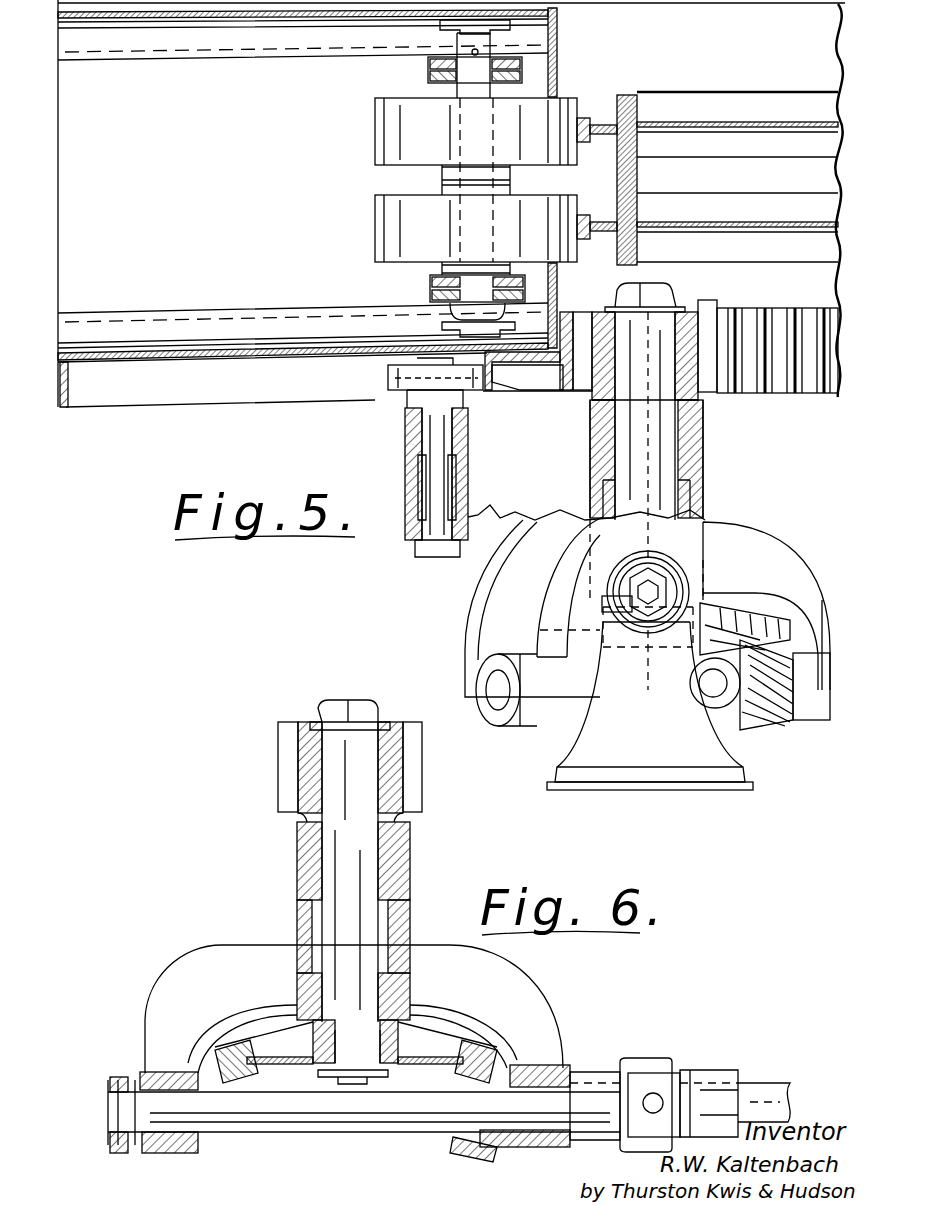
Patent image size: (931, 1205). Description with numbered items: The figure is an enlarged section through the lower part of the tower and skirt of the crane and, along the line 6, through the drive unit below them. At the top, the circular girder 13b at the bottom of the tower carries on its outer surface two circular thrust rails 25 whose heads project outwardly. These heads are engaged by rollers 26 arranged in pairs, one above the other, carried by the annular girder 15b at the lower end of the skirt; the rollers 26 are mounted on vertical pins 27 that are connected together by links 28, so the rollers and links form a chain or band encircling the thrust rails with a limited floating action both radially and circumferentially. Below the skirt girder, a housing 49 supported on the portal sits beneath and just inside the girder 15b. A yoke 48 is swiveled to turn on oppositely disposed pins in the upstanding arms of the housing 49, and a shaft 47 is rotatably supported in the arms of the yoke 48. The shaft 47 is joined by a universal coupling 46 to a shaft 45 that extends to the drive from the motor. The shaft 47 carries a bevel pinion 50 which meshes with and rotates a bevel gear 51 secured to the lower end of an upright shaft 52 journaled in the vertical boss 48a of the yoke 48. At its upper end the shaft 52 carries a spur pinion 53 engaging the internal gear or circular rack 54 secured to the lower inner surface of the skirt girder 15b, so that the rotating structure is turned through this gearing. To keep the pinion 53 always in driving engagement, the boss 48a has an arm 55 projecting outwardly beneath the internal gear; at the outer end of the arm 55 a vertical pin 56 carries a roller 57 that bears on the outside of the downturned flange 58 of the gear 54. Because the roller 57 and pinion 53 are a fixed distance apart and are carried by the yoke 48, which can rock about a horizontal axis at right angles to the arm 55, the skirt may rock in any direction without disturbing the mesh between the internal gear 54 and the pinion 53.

In FIG. 5, the annular girder 15b is at (290, 25).
In FIG. 5, the circular girder 13b is at (665, 128).
In FIG. 5, the circular thrust rails 25 is at (603, 117).
In FIG. 5, the rollers 26 is at (388, 152).
In FIG. 5, the vertical pins 27 is at (468, 72).
In FIG. 5, the links 28 is at (428, 64).
In FIG. 5, the section line 6— 6 is at (644, 484).
In FIG. 6, the shafts 45 is at (758, 1087).
In FIG. 6, the universal couplings 46 is at (662, 1061).
In FIG. 5, the shafts 47 is at (587, 699).
In FIG. 6, the shafts 47 is at (297, 1118).
In FIG. 5, the yoke 48 is at (790, 545).
In FIG. 6, the yoke 48 is at (543, 1003).
In FIG. 6, the vertical boss 48a is at (298, 896).
In FIG. 5, the housing 49 is at (650, 706).
In FIG. 5, the bevel pinion 50 is at (752, 717).
In FIG. 6, the bevel pinion 50 is at (483, 1146).
In FIG. 5, the bevel gear 51 is at (833, 604).
In FIG. 6, the bevel gear 51 is at (447, 1038).
In FIG. 5, the upright shaft 52 is at (660, 491).
In FIG. 6, the upright shaft 52 is at (365, 871).
In FIG. 5, the spur pinion 53 is at (700, 303).
In FIG. 6, the spur pinion 53 is at (402, 786).
In FIG. 5, the internal gear 54 is at (778, 392).
In FIG. 5, the arm 55 is at (498, 503).
In FIG. 5, the vertical pin 56 is at (435, 469).
In FIG. 5, the roller 57 is at (387, 393).
In FIG. 5, the downturned flange 58 is at (488, 407).